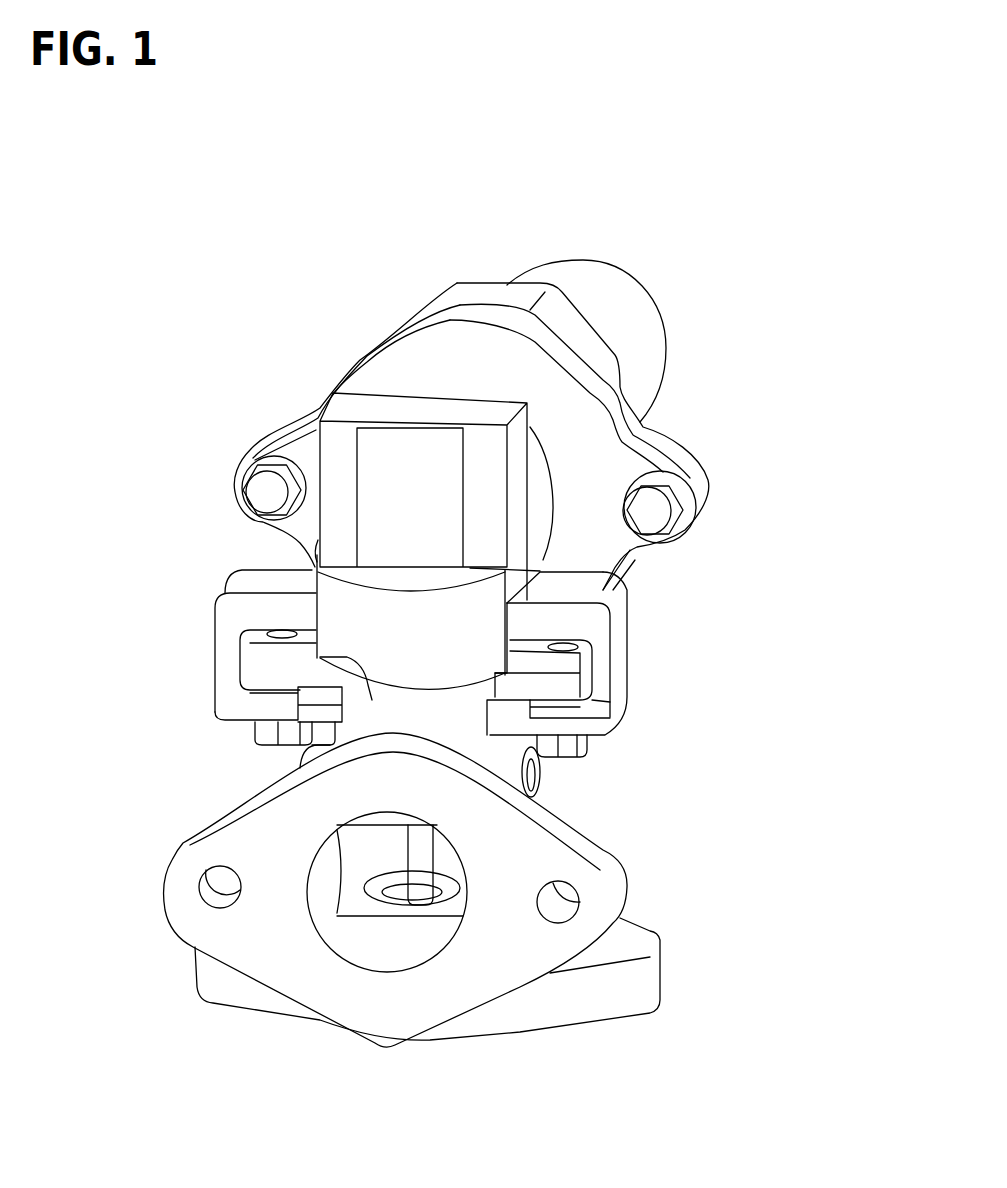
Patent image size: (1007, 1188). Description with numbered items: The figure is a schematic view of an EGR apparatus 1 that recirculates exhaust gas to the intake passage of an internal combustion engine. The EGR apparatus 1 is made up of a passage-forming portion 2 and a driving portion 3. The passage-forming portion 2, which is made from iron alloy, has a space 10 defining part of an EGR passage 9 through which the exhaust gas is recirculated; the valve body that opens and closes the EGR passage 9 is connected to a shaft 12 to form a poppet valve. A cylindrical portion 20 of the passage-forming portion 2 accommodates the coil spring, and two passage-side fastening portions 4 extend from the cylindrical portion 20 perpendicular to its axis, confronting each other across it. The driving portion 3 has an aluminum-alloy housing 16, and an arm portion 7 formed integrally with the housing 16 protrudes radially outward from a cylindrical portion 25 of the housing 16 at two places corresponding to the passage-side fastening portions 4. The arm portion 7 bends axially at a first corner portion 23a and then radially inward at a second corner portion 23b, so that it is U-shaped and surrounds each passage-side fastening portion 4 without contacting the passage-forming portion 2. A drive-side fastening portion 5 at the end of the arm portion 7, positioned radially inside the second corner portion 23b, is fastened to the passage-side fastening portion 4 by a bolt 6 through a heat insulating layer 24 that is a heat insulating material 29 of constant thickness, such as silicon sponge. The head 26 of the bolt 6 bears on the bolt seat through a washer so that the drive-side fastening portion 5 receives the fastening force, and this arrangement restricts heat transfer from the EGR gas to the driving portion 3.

The EGR apparatus 1 is at (232, 255).
The passage-forming portion 2 is at (670, 1058).
The driving portion 3 is at (678, 293).
The passage-side fastening portion 4 is at (570, 627).
The drive-side fastening portion 5 is at (552, 673).
The bolt 6 is at (633, 787).
The arm portion 7 is at (650, 717).
The EGR passage 9 is at (775, 553).
The space 10 is at (323, 883).
The shaft 12 is at (428, 885).
The housing 16 is at (276, 603).
The cylindrical portion 20 is at (316, 658).
The first corner portion 23a is at (650, 597).
The second corner portion 23b is at (597, 713).
The heat insulating layer 24 is at (636, 694).
The cylindrical portion 25 is at (342, 608).
The head 26 is at (570, 748).
The heat insulating material 29 is at (545, 720).